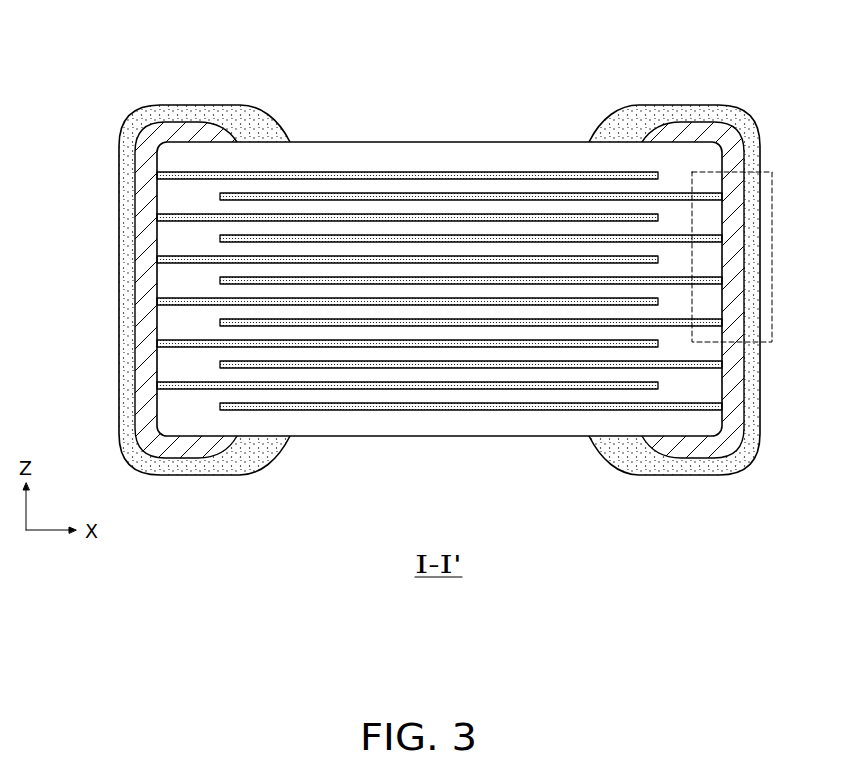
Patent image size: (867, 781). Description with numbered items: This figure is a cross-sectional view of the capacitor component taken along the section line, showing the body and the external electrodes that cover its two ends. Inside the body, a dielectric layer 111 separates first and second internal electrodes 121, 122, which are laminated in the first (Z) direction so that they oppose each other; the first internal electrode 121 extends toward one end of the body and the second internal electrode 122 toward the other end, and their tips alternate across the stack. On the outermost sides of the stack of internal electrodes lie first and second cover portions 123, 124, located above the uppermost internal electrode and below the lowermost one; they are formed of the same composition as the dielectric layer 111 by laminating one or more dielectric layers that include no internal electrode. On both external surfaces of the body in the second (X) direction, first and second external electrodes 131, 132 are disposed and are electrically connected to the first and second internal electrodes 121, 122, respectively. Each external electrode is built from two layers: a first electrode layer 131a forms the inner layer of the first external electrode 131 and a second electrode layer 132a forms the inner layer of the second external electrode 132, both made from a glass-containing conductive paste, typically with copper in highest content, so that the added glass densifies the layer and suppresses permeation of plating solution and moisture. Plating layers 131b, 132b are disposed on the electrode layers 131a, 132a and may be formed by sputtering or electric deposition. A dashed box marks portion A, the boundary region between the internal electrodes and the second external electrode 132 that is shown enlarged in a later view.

The dielectric layer 111 is at (462, 372).
The first internal electrode 121 is at (160, 384).
The second internal electrode 122 is at (353, 410).
The first cover portion 123 is at (477, 152).
The second cover portion 124 is at (540, 420).
The first external electrode 131 is at (204, 248).
The first electrode layer 131a is at (175, 108).
The plating layer 131b is at (238, 126).
The second external electrode 132 is at (674, 246).
The second electrode layer 132a is at (705, 125).
The plating layer 132b is at (633, 124).
The portion A is at (774, 172).